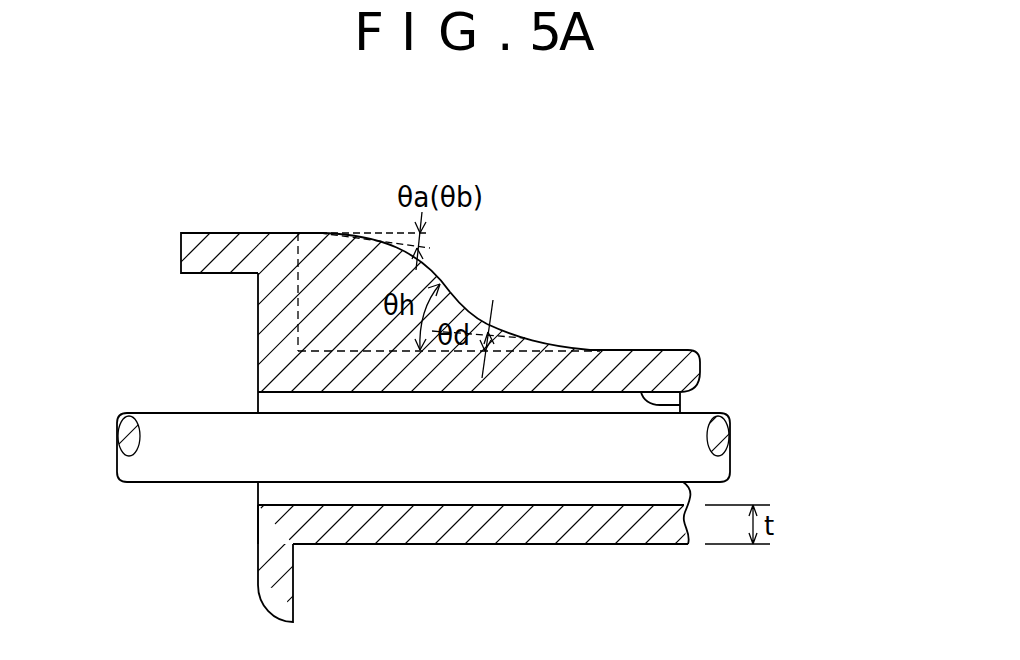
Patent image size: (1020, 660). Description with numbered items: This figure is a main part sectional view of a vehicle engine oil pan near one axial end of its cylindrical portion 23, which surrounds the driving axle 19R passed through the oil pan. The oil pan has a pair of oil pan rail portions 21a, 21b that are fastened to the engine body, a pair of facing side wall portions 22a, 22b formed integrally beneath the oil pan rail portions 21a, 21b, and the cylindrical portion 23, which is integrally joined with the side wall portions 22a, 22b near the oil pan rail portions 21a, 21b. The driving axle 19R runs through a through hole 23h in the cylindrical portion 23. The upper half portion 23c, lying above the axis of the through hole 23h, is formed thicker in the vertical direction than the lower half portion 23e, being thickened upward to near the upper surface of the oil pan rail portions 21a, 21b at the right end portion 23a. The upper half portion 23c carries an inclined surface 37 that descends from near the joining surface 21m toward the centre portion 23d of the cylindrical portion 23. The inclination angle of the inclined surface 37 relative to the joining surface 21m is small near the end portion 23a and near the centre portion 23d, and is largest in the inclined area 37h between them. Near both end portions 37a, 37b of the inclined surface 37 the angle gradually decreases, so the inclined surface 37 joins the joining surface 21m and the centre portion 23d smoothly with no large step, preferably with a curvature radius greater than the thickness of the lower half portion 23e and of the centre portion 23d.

The oil pan rail portion 21a is at (510, 330).
The oil pan rail portion 21b is at (213, 248).
The joining surface 21m is at (267, 233).
The inclined surface 37 is at (467, 243).
The end portion of the inclined surface 37a is at (372, 239).
The inclined area 37h is at (447, 294).
The end portion of the inclined surface 37b is at (546, 348).
The cylindrical portion 23 is at (617, 335).
The centre portion 23d is at (659, 351).
The upper half portion 23c is at (702, 364).
The through hole 23h is at (682, 396).
The driving axle 19R is at (180, 413).
The side wall portion 22a is at (510, 330).
The side wall portion 22b is at (257, 553).
The right end portion 23a is at (290, 531).
The lower half portion 23e is at (541, 531).